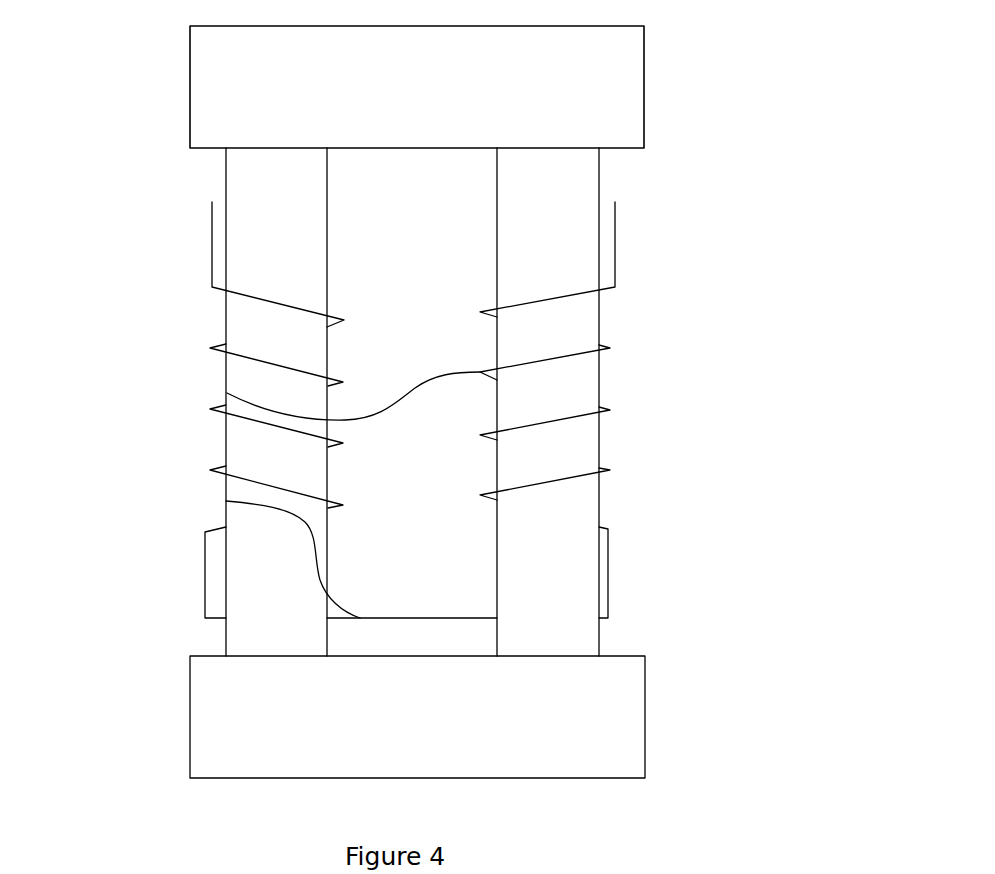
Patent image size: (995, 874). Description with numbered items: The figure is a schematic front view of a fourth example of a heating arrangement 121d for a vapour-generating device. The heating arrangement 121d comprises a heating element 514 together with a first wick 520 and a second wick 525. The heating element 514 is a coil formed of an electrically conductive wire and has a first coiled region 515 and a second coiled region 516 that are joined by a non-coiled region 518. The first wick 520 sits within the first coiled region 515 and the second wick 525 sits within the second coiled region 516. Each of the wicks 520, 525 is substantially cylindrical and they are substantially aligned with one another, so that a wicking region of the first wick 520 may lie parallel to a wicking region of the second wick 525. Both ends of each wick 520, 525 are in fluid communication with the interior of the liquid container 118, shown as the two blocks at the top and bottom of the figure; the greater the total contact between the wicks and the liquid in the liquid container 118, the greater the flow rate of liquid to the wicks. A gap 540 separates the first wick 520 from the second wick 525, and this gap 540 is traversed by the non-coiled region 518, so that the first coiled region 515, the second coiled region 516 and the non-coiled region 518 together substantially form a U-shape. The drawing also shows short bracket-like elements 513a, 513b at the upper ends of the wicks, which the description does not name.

The liquid container 118 is at (190, 117).
The heating arrangement 121d is at (703, 77).
The first bracket 513a is at (212, 215).
The second bracket 513b is at (615, 208).
The first wick 520 is at (225, 327).
The second wick 525 is at (599, 324).
The heating element 514 is at (108, 365).
The second coiled region 516 is at (227, 393).
The first coiled region 515 is at (225, 409).
The non-coiled region 518 is at (226, 501).
The gap 540 is at (401, 352).